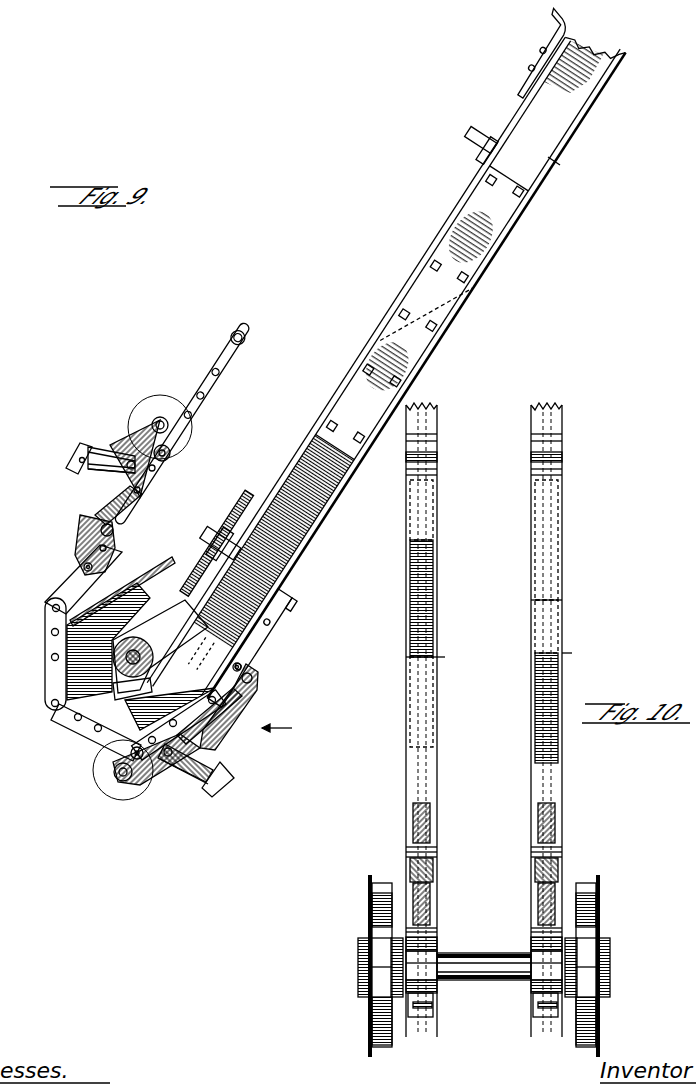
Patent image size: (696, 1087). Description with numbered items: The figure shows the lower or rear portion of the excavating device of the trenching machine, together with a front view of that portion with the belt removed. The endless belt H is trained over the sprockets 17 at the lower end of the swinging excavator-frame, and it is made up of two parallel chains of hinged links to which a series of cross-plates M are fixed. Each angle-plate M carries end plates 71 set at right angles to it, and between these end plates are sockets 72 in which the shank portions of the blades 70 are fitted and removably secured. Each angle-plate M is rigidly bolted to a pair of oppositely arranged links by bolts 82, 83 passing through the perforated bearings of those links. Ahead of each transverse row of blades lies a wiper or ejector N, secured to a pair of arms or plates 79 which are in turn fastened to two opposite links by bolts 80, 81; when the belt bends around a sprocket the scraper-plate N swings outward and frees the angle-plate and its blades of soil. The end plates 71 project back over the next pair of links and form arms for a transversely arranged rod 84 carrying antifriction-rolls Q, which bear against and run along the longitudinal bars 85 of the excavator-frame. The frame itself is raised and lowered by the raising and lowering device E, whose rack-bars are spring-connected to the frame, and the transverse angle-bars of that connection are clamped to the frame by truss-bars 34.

In FIG. 9, the sprockets 17 is at (103, 697).
In FIG. 10, the sprockets 17 is at (383, 1048).
In FIG. 9, the truss-bars 34 is at (548, 50).
In FIG. 9, the blades 70 is at (70, 463).
In FIG. 9, the end plates 71 is at (124, 433).
In FIG. 9, the sockets 72 is at (88, 472).
In FIG. 9, the arms or plates 79 is at (80, 530).
In FIG. 9, the bolt 80 is at (94, 567).
In FIG. 9, the bolt 81 is at (112, 550).
In FIG. 9, the bolt 82 is at (133, 497).
In FIG. 9, the bolt 83 is at (167, 477).
In FIG. 9, the transversely-arranged rod 84 is at (165, 417).
In FIG. 9, the longitudinal bars 85 is at (571, 160).
In FIG. 10, the longitudinal bars 85 is at (520, 648).
In FIG. 9, the raising and lowering device E is at (411, 286).
In FIG. 10, the raising and lowering device E is at (484, 720).
In FIG. 9, the endless belt H is at (236, 352).
In FIG. 9, the cross-plates M is at (116, 452).
In FIG. 9, the wipers or ejectors N is at (110, 502).
In FIG. 9, the antifriction-rolls Q is at (158, 398).